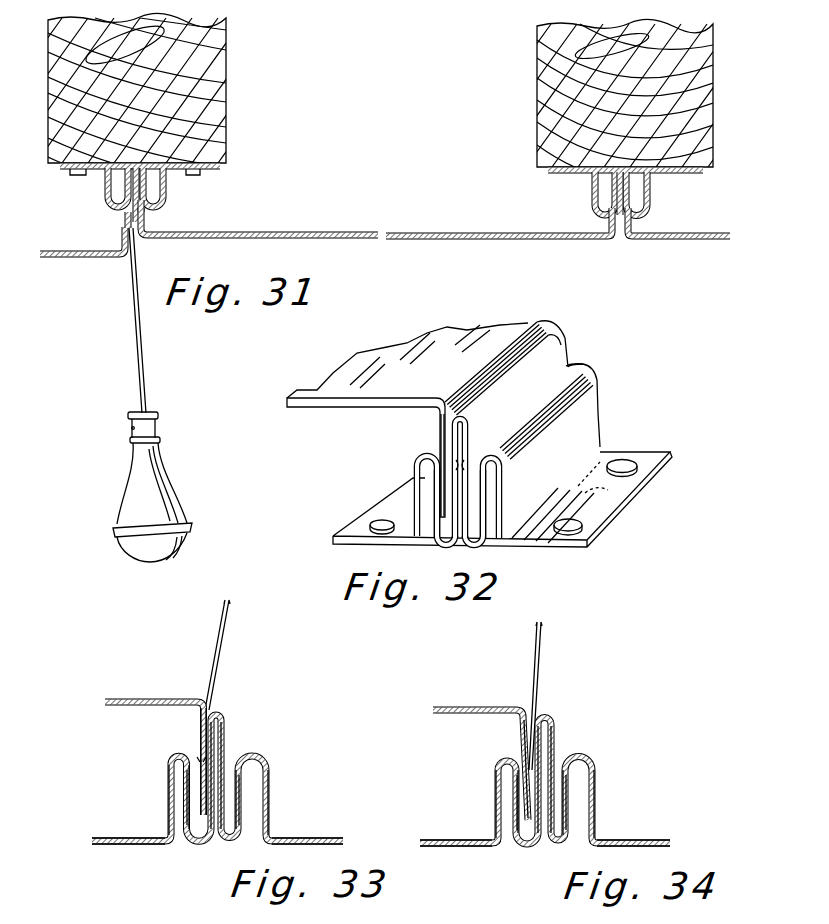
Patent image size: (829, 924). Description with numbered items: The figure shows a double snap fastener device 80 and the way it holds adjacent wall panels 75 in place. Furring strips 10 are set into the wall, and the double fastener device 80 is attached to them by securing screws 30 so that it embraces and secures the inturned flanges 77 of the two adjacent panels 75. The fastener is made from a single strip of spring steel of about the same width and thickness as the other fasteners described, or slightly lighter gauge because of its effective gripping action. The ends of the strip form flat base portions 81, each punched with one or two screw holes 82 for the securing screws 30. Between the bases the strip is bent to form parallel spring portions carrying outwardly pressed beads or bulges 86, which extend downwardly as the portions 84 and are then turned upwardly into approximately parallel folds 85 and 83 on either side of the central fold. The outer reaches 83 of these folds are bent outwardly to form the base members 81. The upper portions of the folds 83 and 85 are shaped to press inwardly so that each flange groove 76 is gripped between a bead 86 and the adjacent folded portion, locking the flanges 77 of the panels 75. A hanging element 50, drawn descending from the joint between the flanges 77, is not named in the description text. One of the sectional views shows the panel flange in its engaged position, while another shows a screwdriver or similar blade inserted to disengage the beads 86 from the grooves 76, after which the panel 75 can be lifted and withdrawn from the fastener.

In FIG. 31, the furring strip 10 is at (227, 113).
In FIG. 31, the securing screw 30 is at (73, 175).
In FIG. 31, the pendant cord / lamp 50 is at (138, 376).
In FIG. 33, the pendant cord / lamp 50 is at (224, 638).
In FIG. 34, the pendant cord / lamp 50 is at (543, 679).
In FIG. 31, the panel 75 is at (47, 257).
In FIG. 32, the panel 75 is at (300, 405).
In FIG. 33, the panel 75 is at (160, 697).
In FIG. 34, the panel 75 is at (480, 703).
In FIG. 31, the flange groove 76 is at (127, 222).
In FIG. 32, the flange groove 76 is at (443, 450).
In FIG. 33, the flange groove 76 is at (190, 755).
In FIG. 34, the flange groove 76 is at (523, 767).
In FIG. 31, the inturned flange 77 is at (144, 220).
In FIG. 33, the inturned flange 77 is at (205, 732).
In FIG. 31, the double fastener device 80 is at (102, 206).
In FIG. 32, the double fastener device 80 is at (605, 375).
In FIG. 33, the double fastener device 80 is at (217, 778).
In FIG. 34, the double fastener device 80 is at (545, 781).
In FIG. 32, the flat base portion 81 is at (378, 500).
In FIG. 33, the flat base portion 81 is at (127, 835).
In FIG. 34, the flat base portion 81 is at (437, 837).
In FIG. 32, the screw hole 82 is at (369, 522).
In FIG. 32, the outer fold 83 is at (416, 523).
In FIG. 33, the outer fold 83 is at (270, 800).
In FIG. 34, the outer fold 83 is at (498, 818).
In FIG. 32, the downwardly extending portion 84 is at (440, 543).
In FIG. 32, the inner fold 85 is at (432, 483).
In FIG. 33, the inner fold 85 is at (243, 774).
In FIG. 34, the inner fold 85 is at (517, 780).
In FIG. 32, the bead 86 is at (468, 460).
In FIG. 33, the bead 86 is at (218, 757).
In FIG. 34, the bead 86 is at (557, 760).